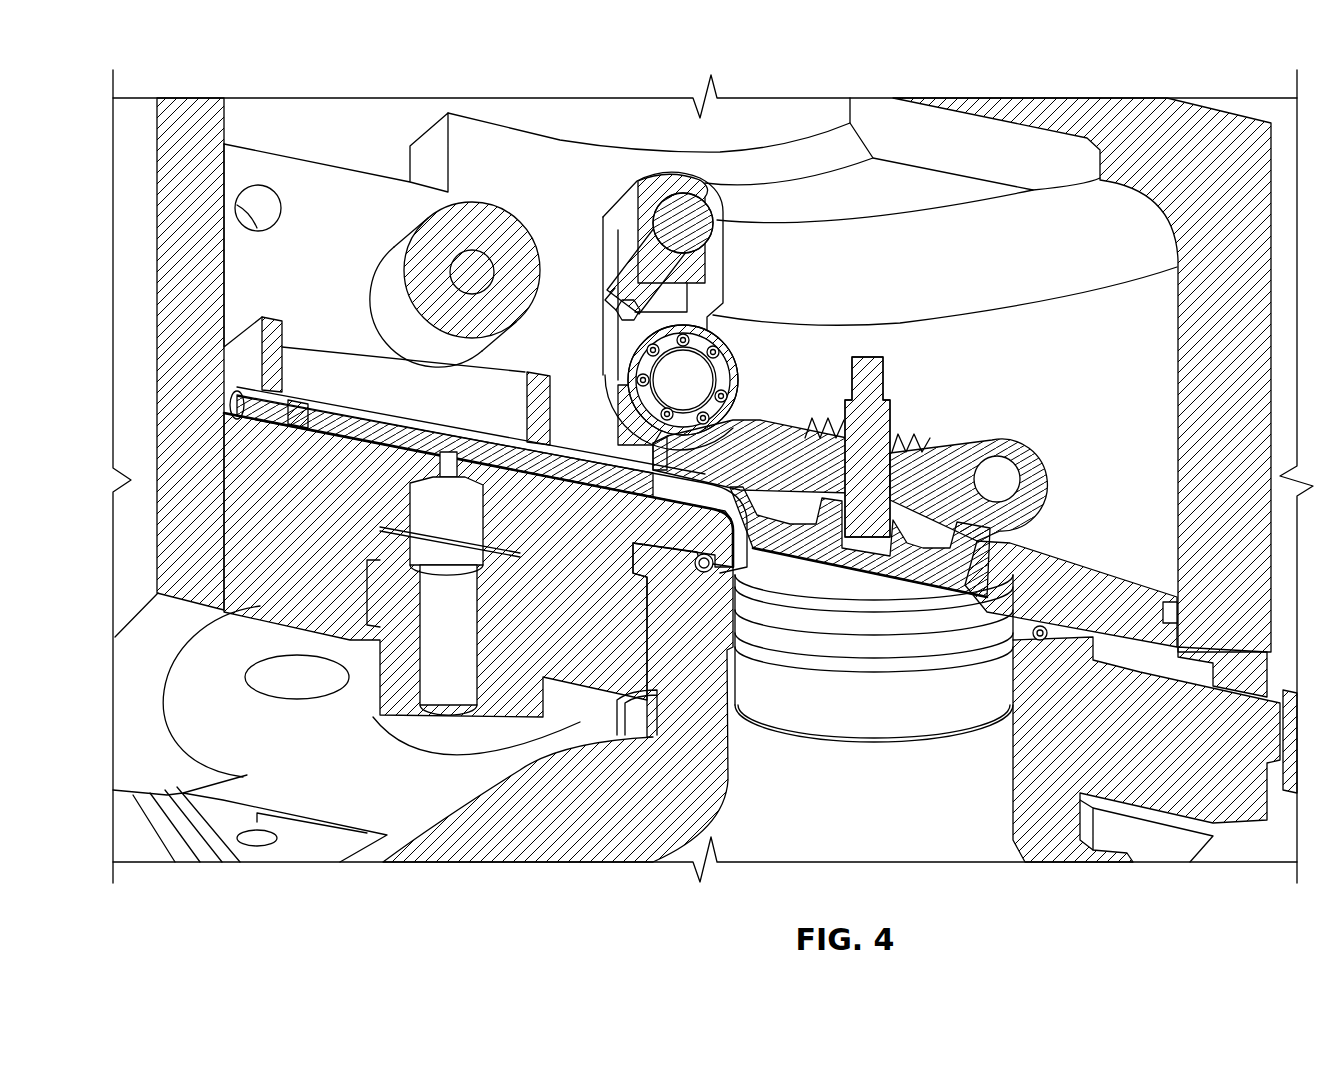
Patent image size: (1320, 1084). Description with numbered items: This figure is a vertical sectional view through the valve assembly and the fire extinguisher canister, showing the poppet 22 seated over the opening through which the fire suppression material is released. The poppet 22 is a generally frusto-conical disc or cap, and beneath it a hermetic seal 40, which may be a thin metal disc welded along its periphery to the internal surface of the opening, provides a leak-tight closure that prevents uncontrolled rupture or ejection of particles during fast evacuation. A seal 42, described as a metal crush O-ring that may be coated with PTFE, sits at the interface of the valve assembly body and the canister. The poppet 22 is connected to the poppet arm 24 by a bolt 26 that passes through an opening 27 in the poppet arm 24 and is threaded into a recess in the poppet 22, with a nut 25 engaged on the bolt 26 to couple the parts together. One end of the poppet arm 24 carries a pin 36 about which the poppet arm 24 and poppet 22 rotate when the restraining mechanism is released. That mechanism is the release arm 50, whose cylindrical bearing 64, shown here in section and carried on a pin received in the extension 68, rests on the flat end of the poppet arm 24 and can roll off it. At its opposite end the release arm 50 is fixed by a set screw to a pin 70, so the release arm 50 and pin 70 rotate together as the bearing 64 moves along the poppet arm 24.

The poppet 22 is at (797, 540).
The poppet arm 24 is at (930, 470).
The nut 25 is at (823, 427).
The bolt 26 is at (845, 403).
The opening 27 is at (907, 463).
The pin 36 is at (1010, 470).
The hermetic seal 40 is at (857, 617).
The seal 42 is at (1040, 643).
The release arm 50 is at (612, 247).
The cylindrical bearing 64 is at (731, 359).
The extension 68 is at (703, 270).
The pin 70 is at (699, 226).